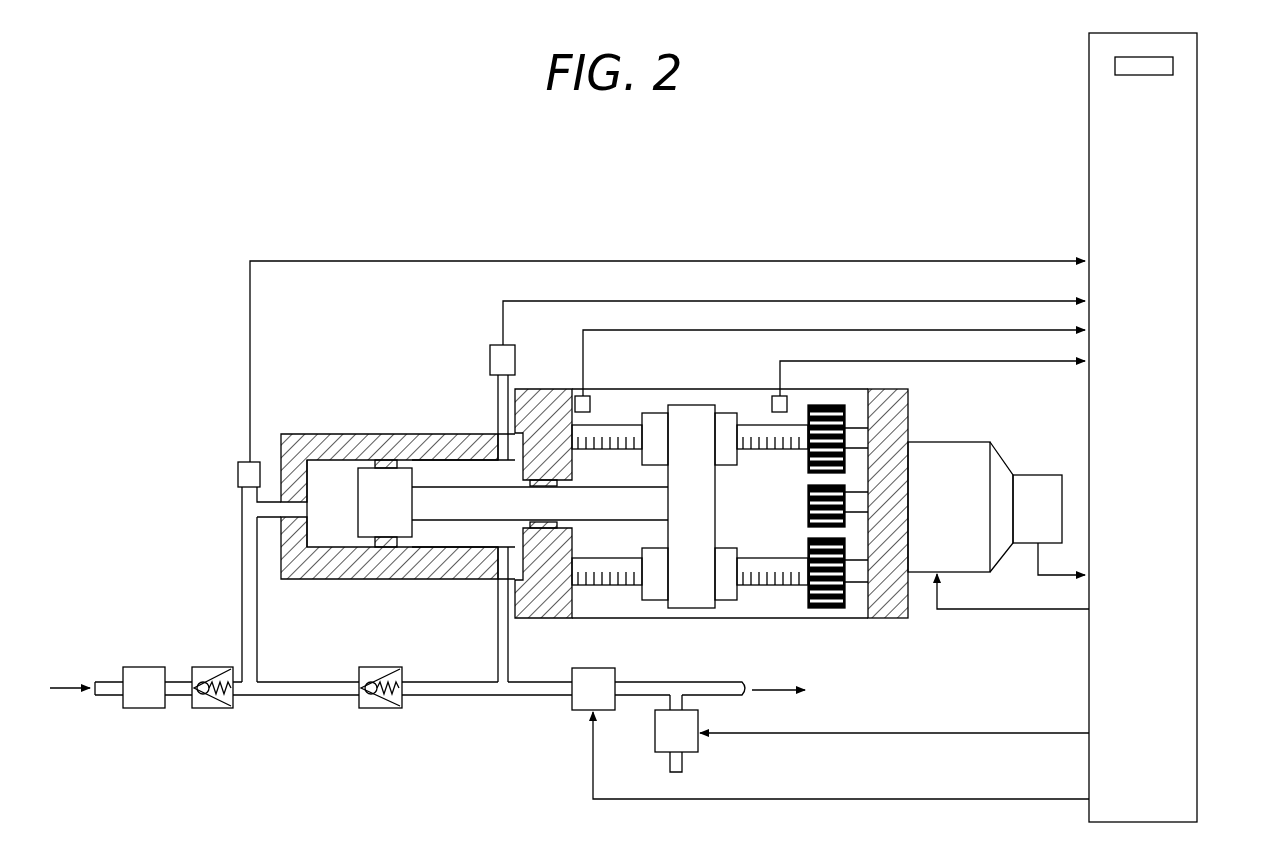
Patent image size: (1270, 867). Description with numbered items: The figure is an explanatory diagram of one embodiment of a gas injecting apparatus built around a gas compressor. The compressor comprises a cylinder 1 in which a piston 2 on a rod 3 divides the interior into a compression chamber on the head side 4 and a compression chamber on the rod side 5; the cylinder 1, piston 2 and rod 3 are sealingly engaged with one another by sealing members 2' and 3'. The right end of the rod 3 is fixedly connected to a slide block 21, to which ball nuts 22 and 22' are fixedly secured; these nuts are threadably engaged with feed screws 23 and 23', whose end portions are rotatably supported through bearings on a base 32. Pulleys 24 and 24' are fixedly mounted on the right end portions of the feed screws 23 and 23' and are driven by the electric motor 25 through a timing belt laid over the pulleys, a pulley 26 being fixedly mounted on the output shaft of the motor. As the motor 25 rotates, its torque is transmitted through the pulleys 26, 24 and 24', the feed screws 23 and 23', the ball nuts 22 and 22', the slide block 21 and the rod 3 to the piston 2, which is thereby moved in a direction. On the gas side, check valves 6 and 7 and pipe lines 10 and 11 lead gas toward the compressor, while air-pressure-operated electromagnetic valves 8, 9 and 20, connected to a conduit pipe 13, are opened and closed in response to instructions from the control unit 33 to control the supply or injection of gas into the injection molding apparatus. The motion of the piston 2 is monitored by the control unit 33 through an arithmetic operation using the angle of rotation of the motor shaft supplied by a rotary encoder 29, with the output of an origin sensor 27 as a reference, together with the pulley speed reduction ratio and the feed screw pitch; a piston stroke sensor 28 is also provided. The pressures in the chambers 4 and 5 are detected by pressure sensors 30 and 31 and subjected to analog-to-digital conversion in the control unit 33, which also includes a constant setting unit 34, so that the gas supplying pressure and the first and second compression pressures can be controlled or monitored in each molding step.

The cylinder 1 is at (316, 433).
The piston 2 is at (394, 459).
The sealing member 2' is at (382, 464).
The rod 3 is at (540, 556).
The sealing member 3' is at (543, 571).
The compression chamber on the head side 4 is at (338, 535).
The compression chamber on the rod side 5 is at (431, 535).
The check valve 6 is at (205, 710).
The check valve 7 is at (373, 710).
The electromagnetic valve 8 is at (135, 710).
The electromagnetic valve 9 is at (603, 668).
The pipe line 10 is at (317, 696).
The pipe line 11 is at (440, 696).
The conduit pipe 13 is at (533, 696).
The electromagnetic valve 20 is at (655, 740).
The slide block 21 is at (702, 405).
The ball nut 22 is at (703, 460).
The ball nut 22' is at (694, 610).
The feed screw 23 is at (720, 400).
The feed screw 23' is at (720, 615).
The pulley 24 is at (834, 605).
The pulley 24' is at (884, 428).
The motor 25 is at (977, 442).
The pulley 26 is at (808, 515).
The origin sensor 27 is at (772, 402).
The piston stroke sensor 28 is at (577, 396).
The rotary encoder 29 is at (1040, 475).
The pressure sensor 30 is at (238, 472).
The pressure sensor 31 is at (490, 352).
The base 32 is at (893, 619).
The control unit 33 is at (1197, 46).
The constant setting unit 34 is at (1173, 70).